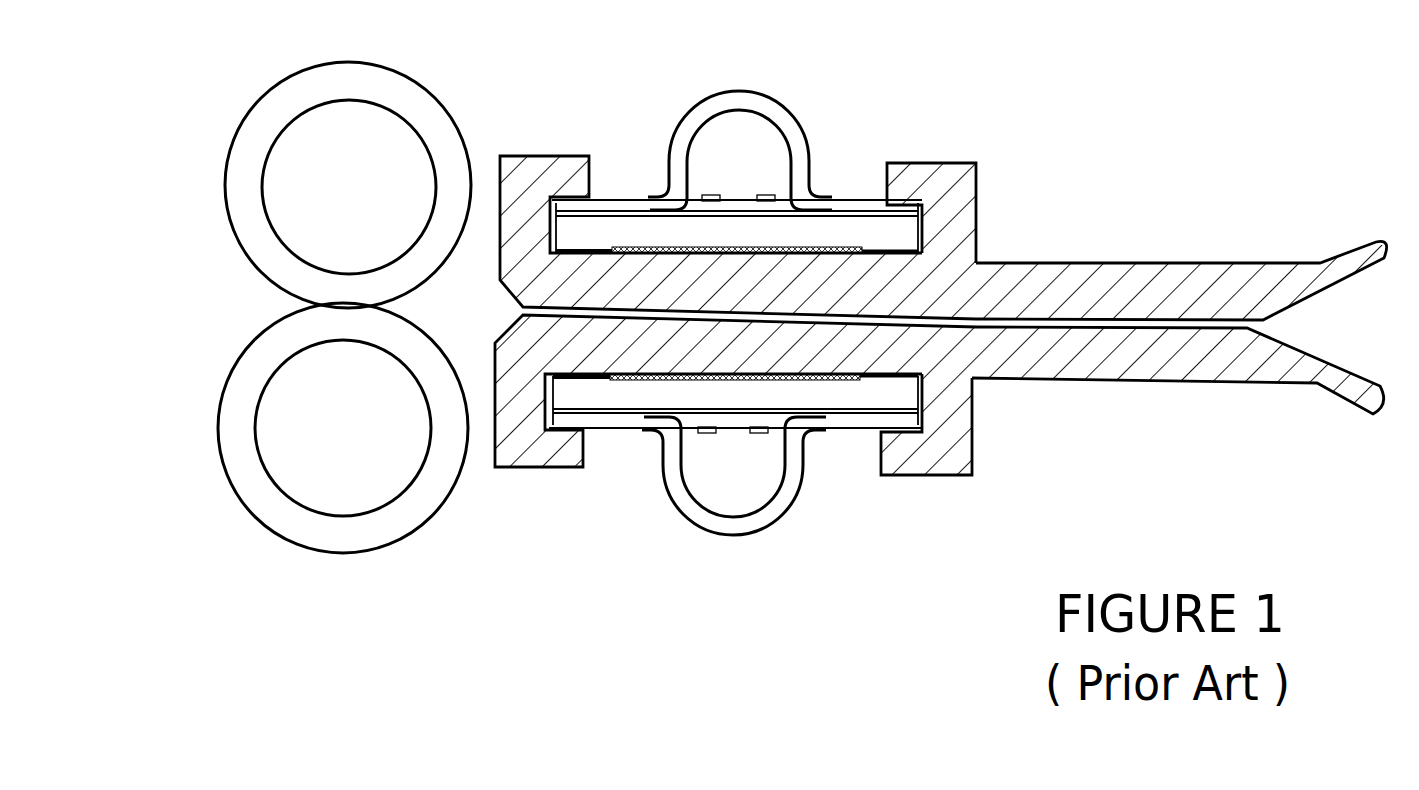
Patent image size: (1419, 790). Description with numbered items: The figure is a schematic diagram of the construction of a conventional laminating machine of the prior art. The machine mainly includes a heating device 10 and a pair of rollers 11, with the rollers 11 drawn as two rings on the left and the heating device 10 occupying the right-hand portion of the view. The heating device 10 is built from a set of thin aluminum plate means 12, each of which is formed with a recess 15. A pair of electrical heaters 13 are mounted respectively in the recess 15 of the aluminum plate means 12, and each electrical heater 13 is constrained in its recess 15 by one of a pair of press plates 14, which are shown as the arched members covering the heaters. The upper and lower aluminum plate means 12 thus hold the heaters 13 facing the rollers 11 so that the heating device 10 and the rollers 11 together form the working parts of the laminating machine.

The heating device 10 is at (1297, 150).
The rollers 11 is at (182, 133).
The thin aluminum plate means 12 is at (1170, 280).
The electrical heaters 13 is at (807, 250).
The press plates 14 is at (740, 92).
The recess 15 is at (925, 233).